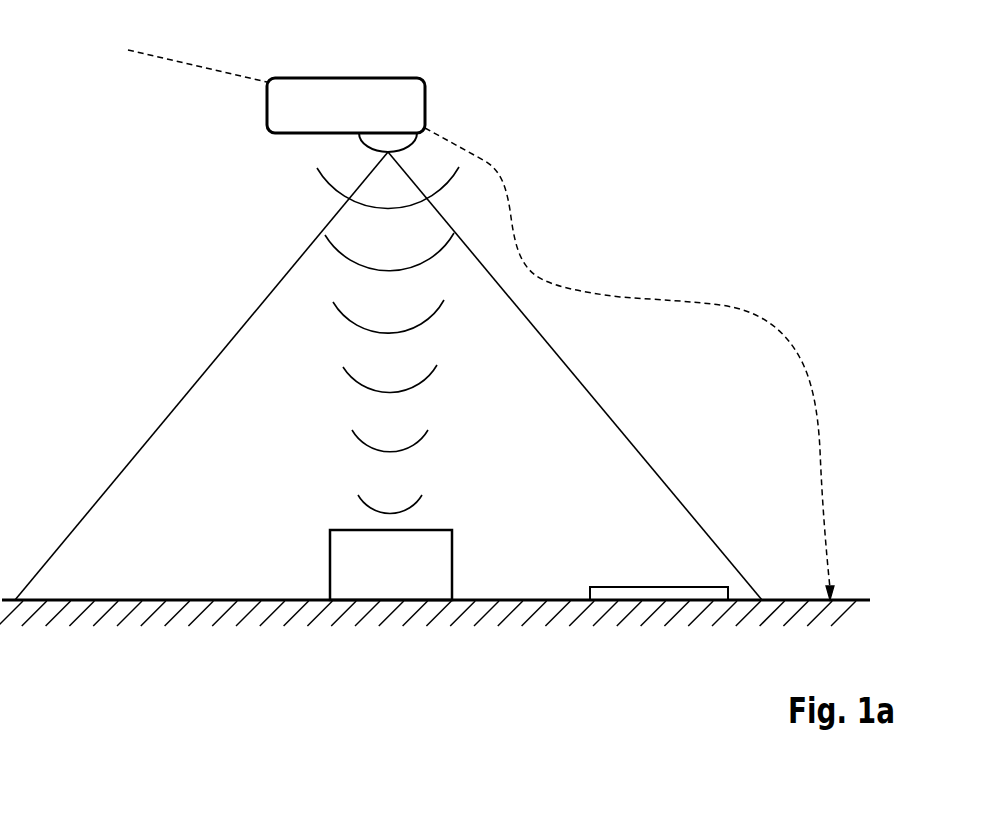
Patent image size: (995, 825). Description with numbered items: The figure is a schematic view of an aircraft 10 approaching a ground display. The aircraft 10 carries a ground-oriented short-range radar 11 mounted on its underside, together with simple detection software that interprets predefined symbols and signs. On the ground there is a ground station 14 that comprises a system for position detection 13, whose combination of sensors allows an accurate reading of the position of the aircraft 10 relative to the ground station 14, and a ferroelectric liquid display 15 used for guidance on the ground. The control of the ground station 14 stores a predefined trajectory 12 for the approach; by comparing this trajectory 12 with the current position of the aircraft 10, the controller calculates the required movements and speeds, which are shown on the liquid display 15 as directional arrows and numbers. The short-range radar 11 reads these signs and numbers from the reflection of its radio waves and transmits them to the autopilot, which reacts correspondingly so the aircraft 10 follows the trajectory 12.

The aircraft 10 is at (340, 78).
The ground-oriented short-range radar 11 is at (360, 135).
The predefined trajectory 12 is at (515, 182).
The system for position detection 13 is at (328, 397).
The ground station 14 is at (330, 560).
The ferroelectric liquid display 15 is at (661, 587).